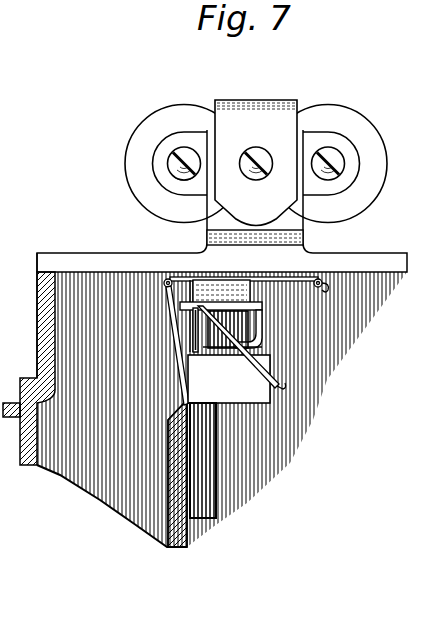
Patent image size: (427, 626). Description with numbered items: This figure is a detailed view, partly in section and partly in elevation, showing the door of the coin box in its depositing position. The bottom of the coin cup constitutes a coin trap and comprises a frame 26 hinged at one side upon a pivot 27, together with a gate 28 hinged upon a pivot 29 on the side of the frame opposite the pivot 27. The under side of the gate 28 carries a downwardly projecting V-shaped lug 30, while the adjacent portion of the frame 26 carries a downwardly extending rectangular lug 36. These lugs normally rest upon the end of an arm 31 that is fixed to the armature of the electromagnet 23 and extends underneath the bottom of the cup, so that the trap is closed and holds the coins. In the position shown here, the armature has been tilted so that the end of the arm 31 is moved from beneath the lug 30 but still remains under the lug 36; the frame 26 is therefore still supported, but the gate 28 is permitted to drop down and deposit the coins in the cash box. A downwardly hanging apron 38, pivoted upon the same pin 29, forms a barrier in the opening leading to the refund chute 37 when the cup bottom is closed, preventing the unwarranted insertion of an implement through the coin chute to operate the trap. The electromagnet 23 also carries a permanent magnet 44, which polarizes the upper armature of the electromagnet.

The electromagnet 23 is at (126, 163).
The frame 26 is at (282, 283).
The pivot 27 is at (322, 289).
The gate 28 is at (262, 363).
The pivot 29 is at (166, 278).
The V-shaped lug 30 is at (228, 357).
The arm 31 is at (193, 327).
The rectangular lug 36 is at (227, 293).
The refund chute 37 is at (205, 400).
The apron 38 is at (190, 386).
The permanent magnet 44 is at (250, 100).